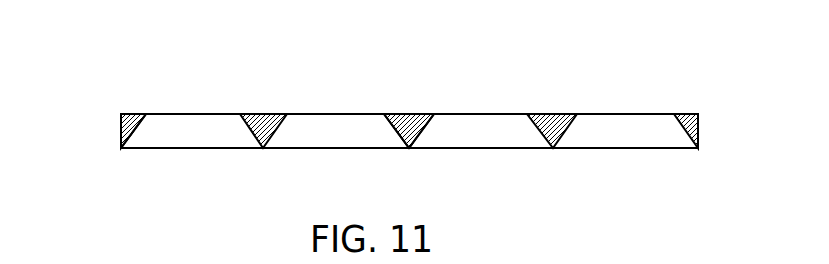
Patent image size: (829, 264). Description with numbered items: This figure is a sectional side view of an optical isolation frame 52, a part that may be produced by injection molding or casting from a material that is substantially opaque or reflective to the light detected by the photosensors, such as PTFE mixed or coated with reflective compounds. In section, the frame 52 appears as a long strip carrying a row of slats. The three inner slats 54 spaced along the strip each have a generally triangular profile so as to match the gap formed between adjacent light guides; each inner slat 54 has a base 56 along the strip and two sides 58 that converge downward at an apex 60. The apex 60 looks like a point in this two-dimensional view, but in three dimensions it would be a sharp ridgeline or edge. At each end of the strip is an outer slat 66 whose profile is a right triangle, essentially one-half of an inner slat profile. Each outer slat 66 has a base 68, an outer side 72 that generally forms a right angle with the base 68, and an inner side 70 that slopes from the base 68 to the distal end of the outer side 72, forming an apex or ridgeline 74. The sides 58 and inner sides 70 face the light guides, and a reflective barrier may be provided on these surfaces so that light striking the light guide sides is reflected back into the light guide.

The optical isolation frame 52 is at (130, 50).
The inner slat 54 is at (264, 122).
The base 56 is at (418, 118).
The sides 58 is at (393, 135).
The apex 60 is at (409, 150).
The outer slat 66 is at (128, 114).
The base 68 is at (140, 114).
The inner side 70 is at (134, 130).
The outer side 72 is at (121, 131).
The apex or ridgeline 74 is at (122, 148).